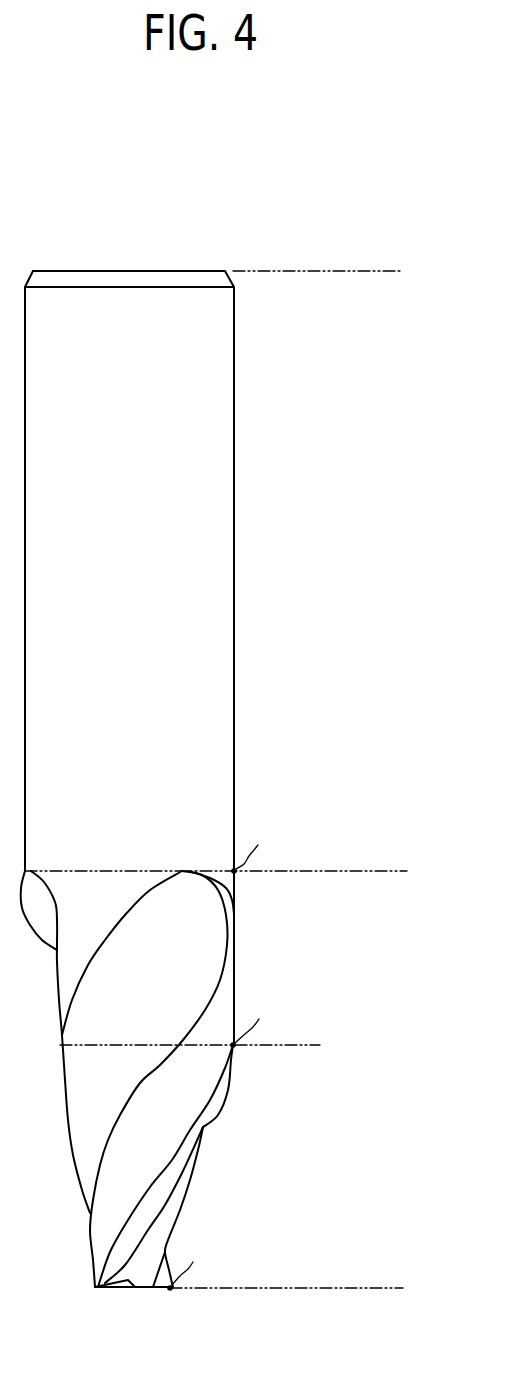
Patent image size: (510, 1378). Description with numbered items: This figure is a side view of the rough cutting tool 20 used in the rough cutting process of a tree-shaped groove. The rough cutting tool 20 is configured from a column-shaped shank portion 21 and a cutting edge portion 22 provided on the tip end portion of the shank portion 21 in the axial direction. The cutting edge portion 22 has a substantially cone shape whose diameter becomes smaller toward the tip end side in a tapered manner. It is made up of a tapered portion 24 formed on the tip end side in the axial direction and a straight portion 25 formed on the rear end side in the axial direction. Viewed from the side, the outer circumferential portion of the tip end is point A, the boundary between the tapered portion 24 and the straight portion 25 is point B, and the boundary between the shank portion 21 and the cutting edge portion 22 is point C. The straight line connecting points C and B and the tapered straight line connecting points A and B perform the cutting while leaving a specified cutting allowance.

The rough cutting tool 20 is at (136, 237).
The shank portion 21 is at (370, 271).
The cutting edge portion 22 is at (372, 871).
The tapered portion 24 is at (280, 1045).
The straight portion 25 is at (280, 871).